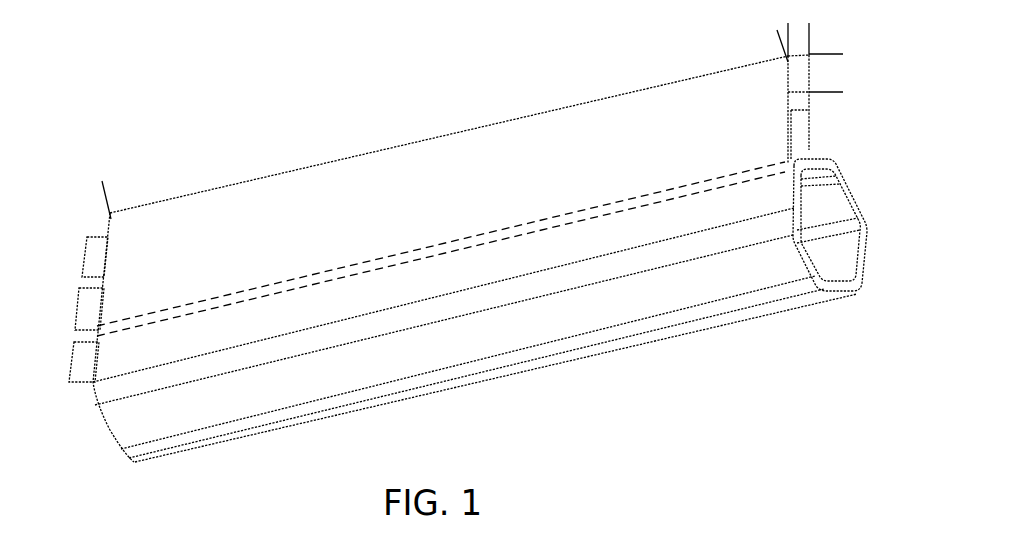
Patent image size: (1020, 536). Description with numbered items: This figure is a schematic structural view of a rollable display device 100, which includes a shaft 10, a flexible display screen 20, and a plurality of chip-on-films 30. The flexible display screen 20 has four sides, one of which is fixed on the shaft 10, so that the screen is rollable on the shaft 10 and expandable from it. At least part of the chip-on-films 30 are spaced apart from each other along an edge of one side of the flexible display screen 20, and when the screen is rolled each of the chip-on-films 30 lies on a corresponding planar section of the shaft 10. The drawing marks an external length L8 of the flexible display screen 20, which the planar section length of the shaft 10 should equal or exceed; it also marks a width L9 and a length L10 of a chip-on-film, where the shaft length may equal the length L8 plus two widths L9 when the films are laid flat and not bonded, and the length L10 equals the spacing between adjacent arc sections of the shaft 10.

The display device 100 is at (98, 46).
The shaft 10 is at (121, 428).
The flexible display screen 20 is at (110, 300).
The chip-on-films 30 is at (90, 249).
The external length of the flexible display screen L8 is at (786, 42).
The width of the chip-on-film L9 is at (830, 43).
The length of the chip-on-film L10 is at (828, 43).